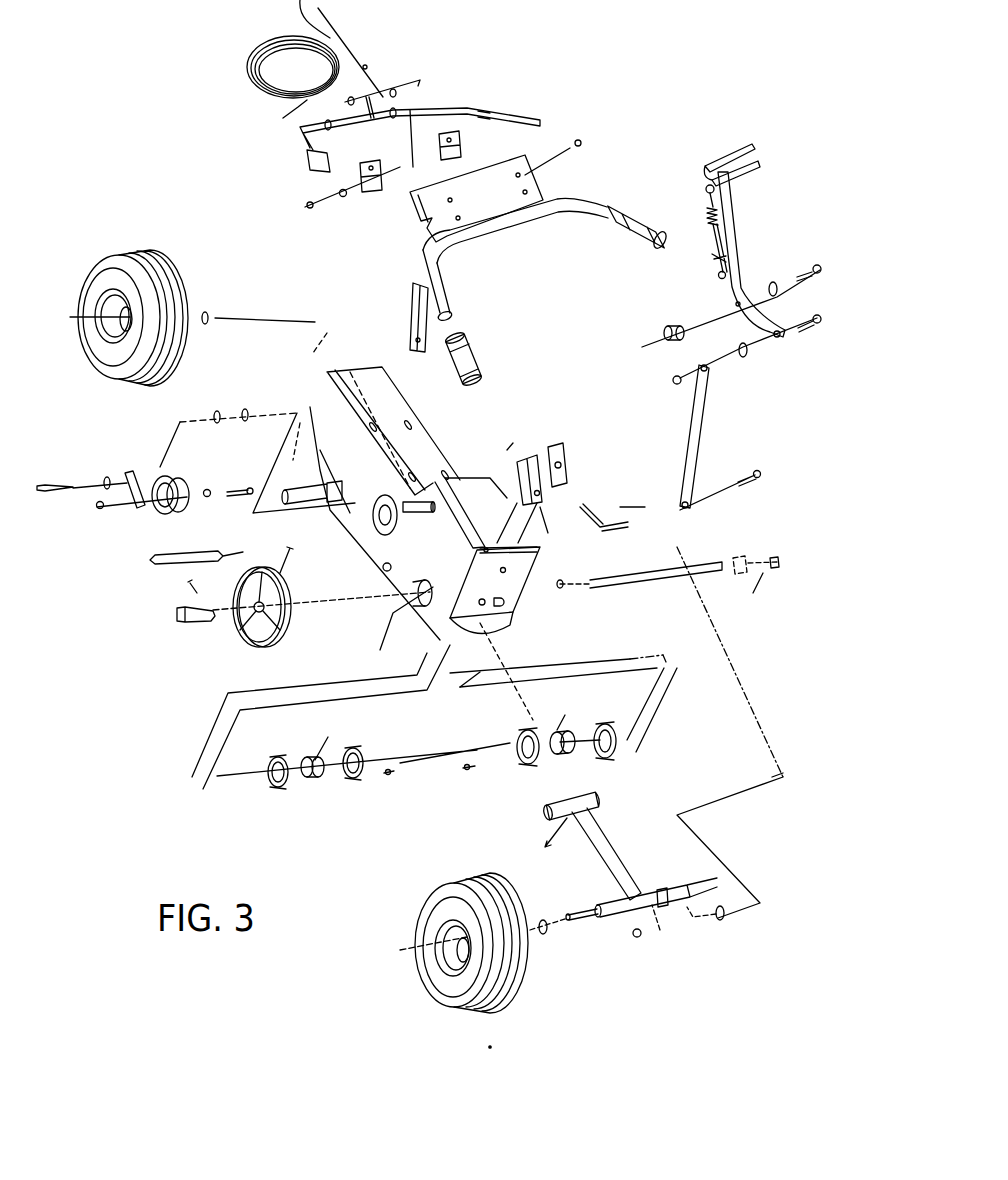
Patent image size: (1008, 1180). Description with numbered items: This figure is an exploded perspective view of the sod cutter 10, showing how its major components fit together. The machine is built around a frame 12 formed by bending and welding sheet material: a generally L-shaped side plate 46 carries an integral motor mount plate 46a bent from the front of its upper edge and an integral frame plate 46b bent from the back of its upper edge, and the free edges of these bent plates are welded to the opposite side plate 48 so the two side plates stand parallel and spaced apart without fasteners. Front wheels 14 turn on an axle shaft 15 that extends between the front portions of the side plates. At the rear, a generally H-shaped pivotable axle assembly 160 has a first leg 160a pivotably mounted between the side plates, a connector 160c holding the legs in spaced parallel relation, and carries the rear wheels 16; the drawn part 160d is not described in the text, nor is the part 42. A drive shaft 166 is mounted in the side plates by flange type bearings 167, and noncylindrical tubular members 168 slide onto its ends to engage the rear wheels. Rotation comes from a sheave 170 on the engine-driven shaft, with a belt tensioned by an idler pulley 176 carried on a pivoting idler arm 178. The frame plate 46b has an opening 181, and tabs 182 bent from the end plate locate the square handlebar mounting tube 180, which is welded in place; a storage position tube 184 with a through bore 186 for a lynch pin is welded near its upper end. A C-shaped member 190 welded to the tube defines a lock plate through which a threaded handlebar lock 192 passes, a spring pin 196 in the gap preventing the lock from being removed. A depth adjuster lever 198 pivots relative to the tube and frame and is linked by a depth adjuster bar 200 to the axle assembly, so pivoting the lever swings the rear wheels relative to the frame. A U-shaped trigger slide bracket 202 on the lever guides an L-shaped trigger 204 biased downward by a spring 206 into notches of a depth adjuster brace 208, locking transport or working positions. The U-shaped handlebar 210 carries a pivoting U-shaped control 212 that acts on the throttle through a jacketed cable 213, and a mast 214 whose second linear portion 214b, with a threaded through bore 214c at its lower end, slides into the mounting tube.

The sod cutter 10 is at (184, 110).
The frame 12 is at (353, 363).
The front wheels 14 is at (195, 298).
The axle shaft 15 is at (297, 493).
The rear wheels 16 is at (412, 948).
The bearing flange 42 is at (402, 528).
The side plate 46 is at (330, 413).
The motor mount plate 46a is at (427, 447).
The frame plate 46b is at (472, 490).
The side plate 48 is at (500, 630).
The pivotable axle assembly 160 is at (627, 872).
The first leg 160a is at (583, 793).
The connector 160c is at (613, 855).
The axle shaft 160d is at (622, 910).
The drive shaft 166 is at (657, 575).
The flange type bearings 167 is at (312, 775).
The tubular members 168 is at (747, 548).
The sheave 170 is at (247, 640).
The idler pulley 176 is at (188, 489).
The idler arm 178 is at (137, 478).
The handlebar mounting tube 180 is at (507, 528).
The opening 181 is at (482, 548).
The tabs 182 is at (495, 582).
The storage position tube 184 is at (532, 450).
The through bore 186 is at (559, 532).
The C-shaped member 190 is at (567, 463).
The handlebar lock 192 is at (593, 530).
The spring pin 196 is at (628, 507).
The depth adjuster lever 198 is at (735, 242).
The depth adjuster bar 200 is at (698, 440).
The trigger slide bracket 202 is at (713, 263).
The trigger 204 is at (705, 193).
The spring 206 is at (708, 213).
The depth adjuster brace 208 is at (510, 437).
The handlebar 210 is at (539, 231).
The control 212 is at (470, 105).
The jacketed cable 213 is at (262, 72).
The mast 214 is at (447, 277).
The second linear portion 214b is at (417, 283).
The through bore 214c is at (432, 307).